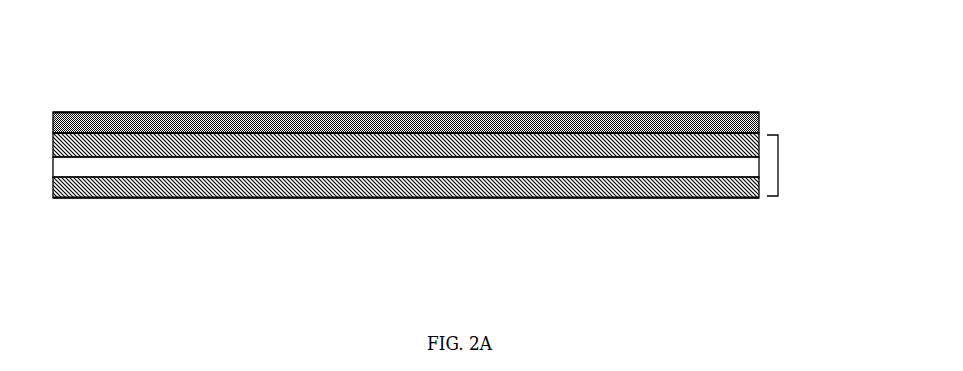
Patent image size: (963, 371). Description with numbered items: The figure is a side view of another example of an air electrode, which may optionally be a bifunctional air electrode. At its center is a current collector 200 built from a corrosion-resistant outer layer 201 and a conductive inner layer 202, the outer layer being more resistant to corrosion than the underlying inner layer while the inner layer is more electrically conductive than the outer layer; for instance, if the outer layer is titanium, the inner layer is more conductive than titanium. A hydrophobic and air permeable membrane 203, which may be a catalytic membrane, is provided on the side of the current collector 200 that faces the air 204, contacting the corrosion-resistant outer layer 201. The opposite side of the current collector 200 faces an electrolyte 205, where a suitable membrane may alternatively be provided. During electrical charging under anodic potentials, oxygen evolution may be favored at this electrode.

The current collector 200 is at (815, 173).
The corrosion-resistant outer layer 201 is at (737, 149).
The conductive inner layer 202 is at (625, 209).
The hydrophobic and air permeable membrane 203 is at (416, 124).
The air 204 is at (105, 41).
The electrolyte 205 is at (140, 273).